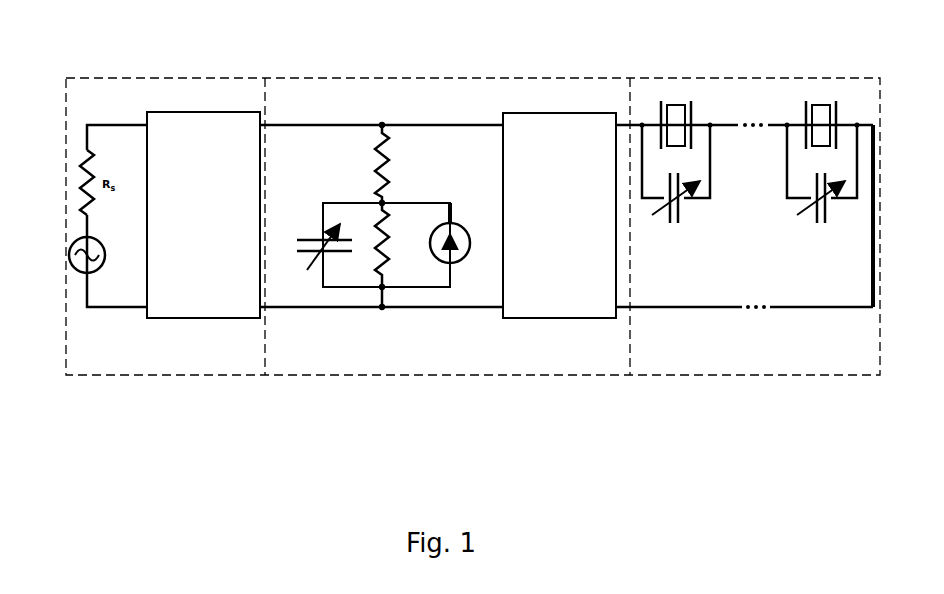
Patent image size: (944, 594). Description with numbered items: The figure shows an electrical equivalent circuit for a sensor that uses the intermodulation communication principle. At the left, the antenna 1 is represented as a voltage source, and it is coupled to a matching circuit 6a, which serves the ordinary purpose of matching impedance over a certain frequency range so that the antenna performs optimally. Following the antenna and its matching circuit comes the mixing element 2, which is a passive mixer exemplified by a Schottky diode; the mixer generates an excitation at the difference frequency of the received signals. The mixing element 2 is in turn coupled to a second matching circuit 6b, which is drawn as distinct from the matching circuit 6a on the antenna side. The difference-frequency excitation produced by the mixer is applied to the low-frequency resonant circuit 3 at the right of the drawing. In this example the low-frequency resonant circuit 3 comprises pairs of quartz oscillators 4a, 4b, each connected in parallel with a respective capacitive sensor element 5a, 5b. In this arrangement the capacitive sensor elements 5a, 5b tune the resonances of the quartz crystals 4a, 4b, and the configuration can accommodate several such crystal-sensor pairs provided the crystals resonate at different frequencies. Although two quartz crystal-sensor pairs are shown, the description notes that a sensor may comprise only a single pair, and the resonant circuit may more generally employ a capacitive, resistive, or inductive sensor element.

The antenna 1 is at (80, 242).
The mixing element 2 is at (381, 216).
The low-frequency resonant circuit 3 is at (720, 157).
The quartz-oscillator 4a is at (678, 99).
The quartz-oscillator 4b is at (818, 99).
The capacitive sensor element 5a is at (657, 163).
The capacitive sensor element 5b is at (805, 163).
The matching circuit 6a is at (231, 113).
The matching circuit 6b is at (564, 113).